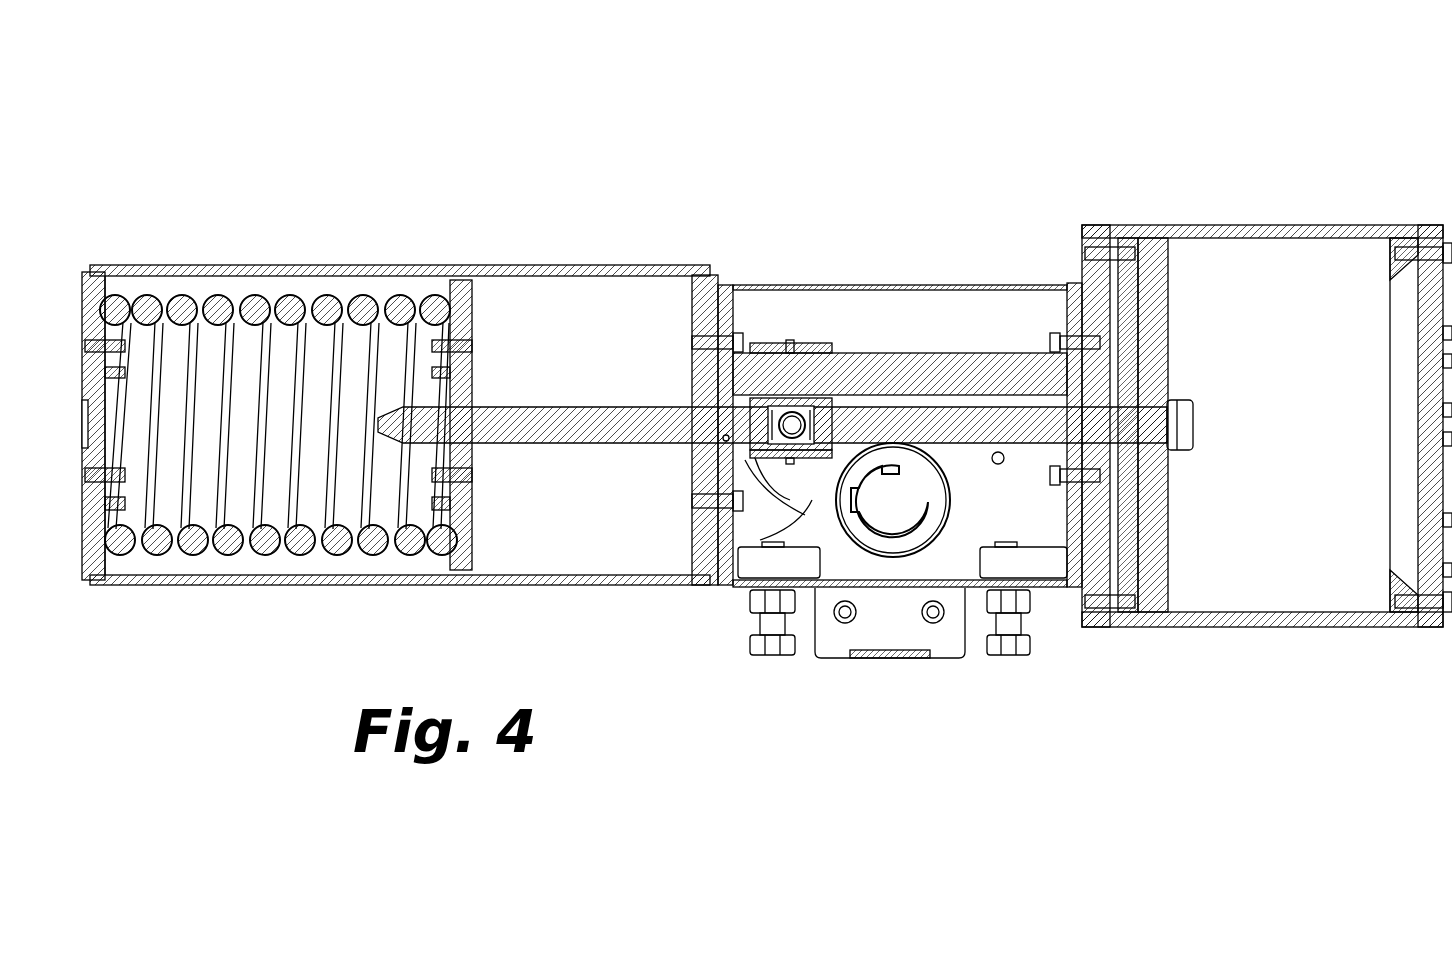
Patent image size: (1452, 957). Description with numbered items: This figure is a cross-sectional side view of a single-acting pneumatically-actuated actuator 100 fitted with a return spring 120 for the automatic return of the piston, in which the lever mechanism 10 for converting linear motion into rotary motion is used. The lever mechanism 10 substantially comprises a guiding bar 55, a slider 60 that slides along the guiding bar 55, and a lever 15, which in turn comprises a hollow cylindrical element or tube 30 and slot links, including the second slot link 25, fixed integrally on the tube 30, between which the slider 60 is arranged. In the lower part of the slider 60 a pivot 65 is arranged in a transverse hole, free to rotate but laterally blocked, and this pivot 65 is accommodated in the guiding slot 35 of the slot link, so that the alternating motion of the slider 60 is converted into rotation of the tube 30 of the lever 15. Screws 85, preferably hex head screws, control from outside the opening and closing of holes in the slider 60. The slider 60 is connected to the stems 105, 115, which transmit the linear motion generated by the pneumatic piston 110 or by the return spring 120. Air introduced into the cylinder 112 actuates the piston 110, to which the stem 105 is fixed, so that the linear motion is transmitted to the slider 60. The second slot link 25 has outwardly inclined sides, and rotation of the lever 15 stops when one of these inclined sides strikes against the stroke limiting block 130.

The single-acting pneumatically-actuated actuator 100 is at (595, 170).
The return spring 120 is at (272, 378).
The stem 115 is at (527, 428).
The lever mechanism 10 is at (925, 318).
The guiding bar 55 is at (858, 372).
The screws 85 is at (790, 343).
The slider 60 is at (775, 425).
The pivot 65 is at (772, 430).
The guiding slot 35 is at (785, 506).
The second slot link 25 is at (828, 462).
The tube 30 is at (930, 505).
The stroke limiting block 130 is at (758, 565).
The lever 15 is at (842, 552).
The stem 105 is at (1006, 432).
The cylinder 112 is at (1270, 225).
The pneumatic piston 110 is at (1157, 320).